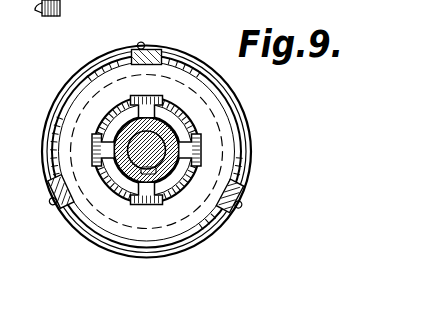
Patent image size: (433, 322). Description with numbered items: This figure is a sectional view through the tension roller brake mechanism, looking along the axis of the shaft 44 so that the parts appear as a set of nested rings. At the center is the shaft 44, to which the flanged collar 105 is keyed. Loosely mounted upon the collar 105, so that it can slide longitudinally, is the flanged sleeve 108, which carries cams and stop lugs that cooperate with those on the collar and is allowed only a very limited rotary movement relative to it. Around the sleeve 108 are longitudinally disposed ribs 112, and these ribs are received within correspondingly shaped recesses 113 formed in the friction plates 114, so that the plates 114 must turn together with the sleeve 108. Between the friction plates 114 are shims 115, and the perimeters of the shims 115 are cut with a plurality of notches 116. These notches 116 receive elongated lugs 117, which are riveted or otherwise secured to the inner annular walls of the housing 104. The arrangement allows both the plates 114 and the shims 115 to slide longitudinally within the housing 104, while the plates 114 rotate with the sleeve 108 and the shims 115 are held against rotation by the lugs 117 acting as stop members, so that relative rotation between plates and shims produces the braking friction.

The housing 104 is at (110, 248).
The notches 116 is at (182, 62).
The flanged collar 105 is at (230, 171).
The shims 115 is at (90, 103).
The elongated lugs 117 is at (152, 50).
The friction plates 114 is at (185, 116).
The shaft 44 is at (165, 184).
The recesses 113 is at (197, 137).
The longitudinally disposed ribs 112 is at (199, 157).
The flanged sleeve 108 is at (160, 172).